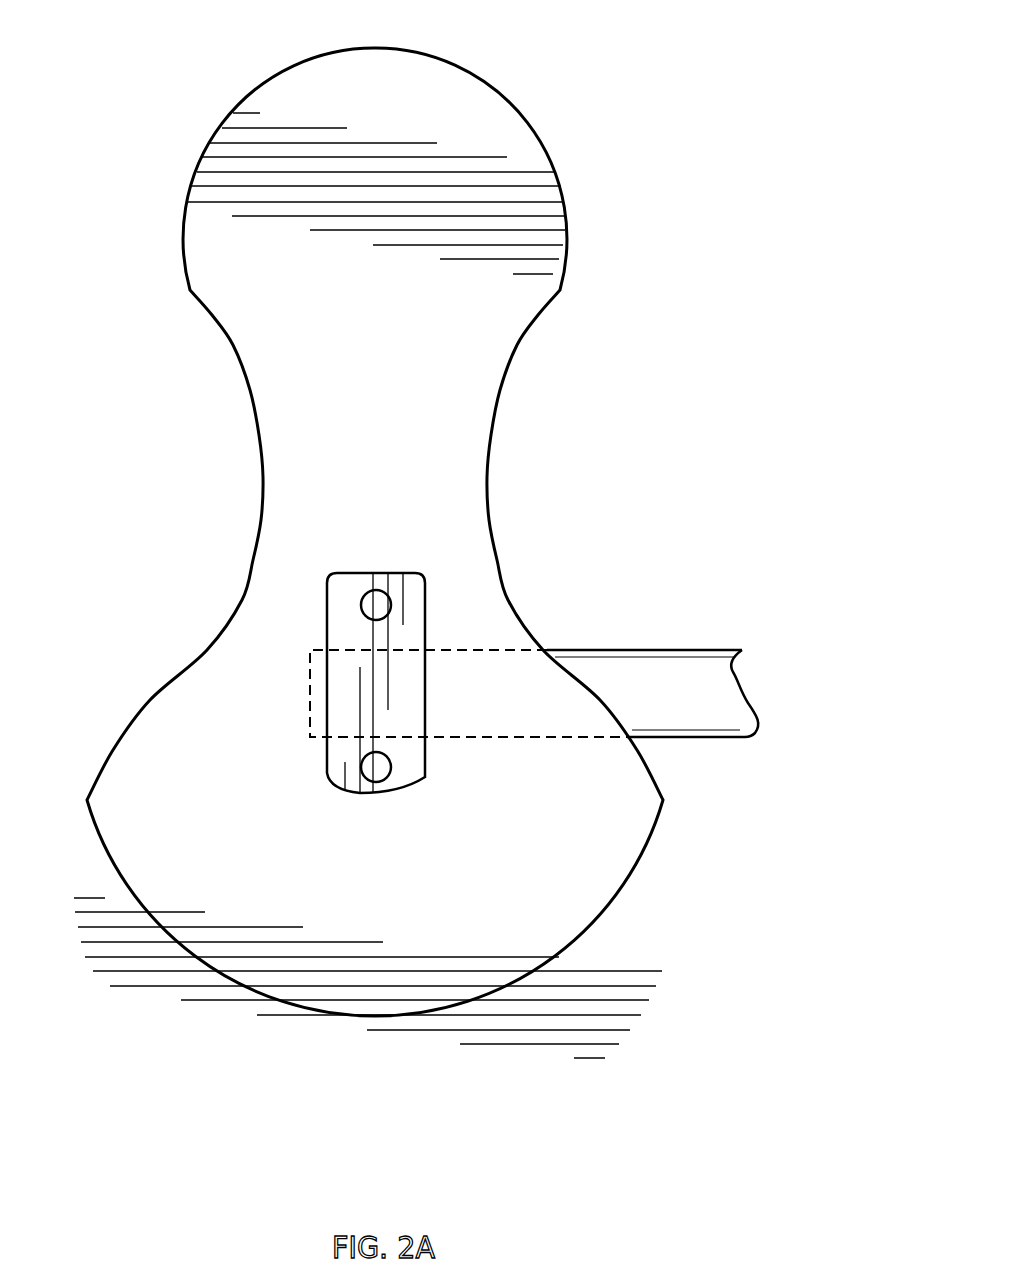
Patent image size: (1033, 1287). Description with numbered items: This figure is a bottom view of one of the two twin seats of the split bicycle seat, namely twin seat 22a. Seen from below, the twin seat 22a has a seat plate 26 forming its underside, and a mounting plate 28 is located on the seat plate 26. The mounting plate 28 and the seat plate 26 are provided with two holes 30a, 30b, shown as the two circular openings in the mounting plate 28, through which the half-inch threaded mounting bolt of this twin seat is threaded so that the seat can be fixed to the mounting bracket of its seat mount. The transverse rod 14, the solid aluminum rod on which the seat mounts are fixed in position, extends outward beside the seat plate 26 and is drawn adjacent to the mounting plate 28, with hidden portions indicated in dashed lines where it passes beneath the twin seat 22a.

The twin seat 22a is at (629, 148).
The transverse rod 14 is at (682, 687).
The seat plate 26 is at (642, 910).
The mounting plate 28 is at (413, 748).
The hole 30a is at (376, 767).
The hole 30b is at (376, 605).